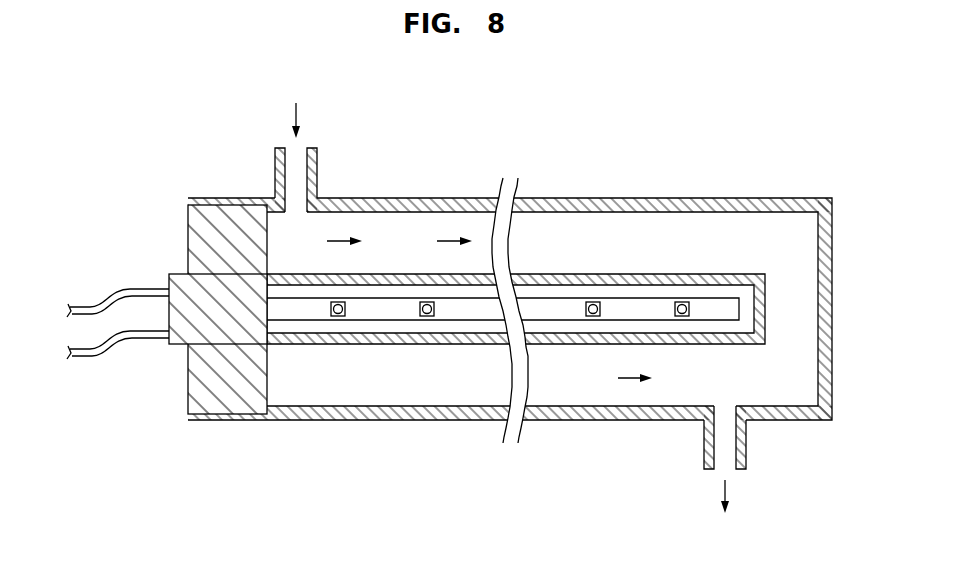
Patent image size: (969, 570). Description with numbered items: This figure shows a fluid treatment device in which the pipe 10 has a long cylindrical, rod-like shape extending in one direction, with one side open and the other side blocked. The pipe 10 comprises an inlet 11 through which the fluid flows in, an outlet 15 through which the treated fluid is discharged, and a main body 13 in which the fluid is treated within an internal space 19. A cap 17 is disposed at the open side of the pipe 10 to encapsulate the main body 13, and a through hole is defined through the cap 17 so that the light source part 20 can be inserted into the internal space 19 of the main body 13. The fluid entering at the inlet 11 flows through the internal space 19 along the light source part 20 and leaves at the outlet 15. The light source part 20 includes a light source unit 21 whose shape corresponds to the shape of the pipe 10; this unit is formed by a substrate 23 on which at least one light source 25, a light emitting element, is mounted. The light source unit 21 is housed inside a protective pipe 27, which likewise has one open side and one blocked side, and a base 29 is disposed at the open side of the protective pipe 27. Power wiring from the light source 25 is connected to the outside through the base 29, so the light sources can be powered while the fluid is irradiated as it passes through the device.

The pipe 10 is at (510, 310).
The inlet 11 is at (313, 150).
The main body 13 is at (510, 310).
The outlet 15 is at (742, 470).
The cap 17 is at (225, 220).
The internal space 19 is at (377, 228).
The light source part 20 is at (516, 309).
The light source unit 21 is at (503, 412).
The substrate 23 is at (385, 310).
The light source 25 is at (428, 317).
The protective pipe 27 is at (315, 345).
The base 29 is at (183, 323).